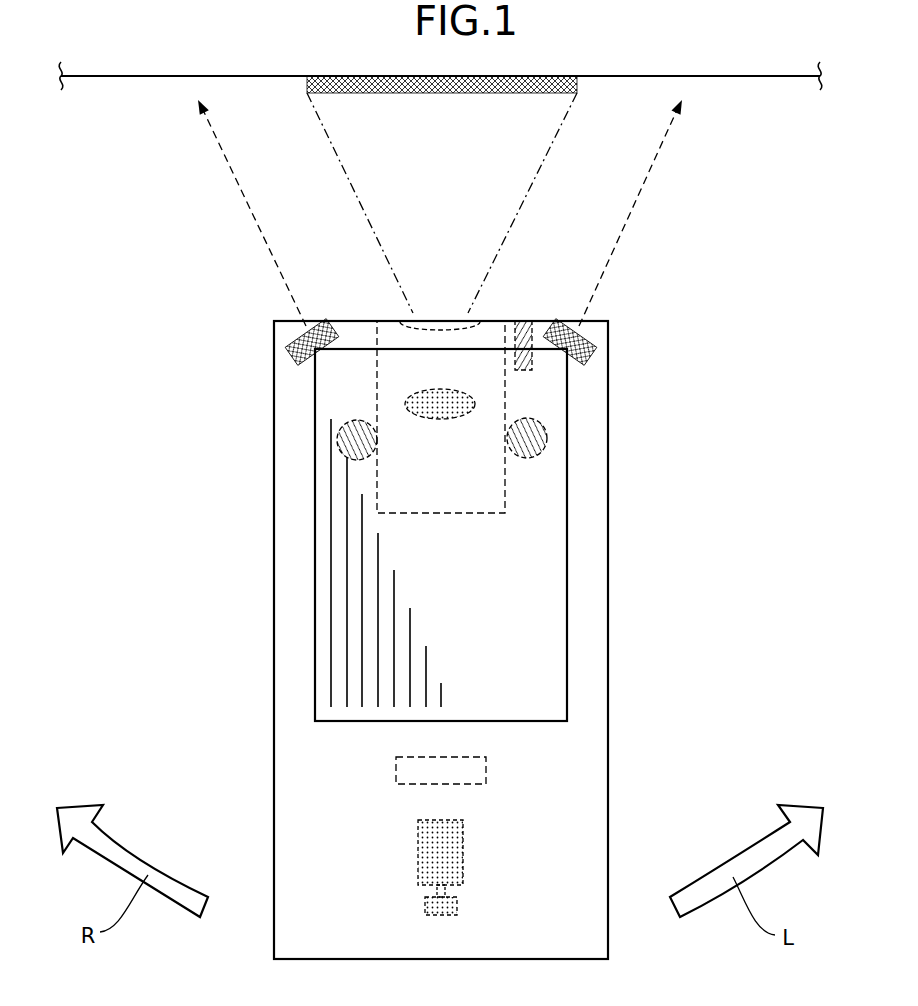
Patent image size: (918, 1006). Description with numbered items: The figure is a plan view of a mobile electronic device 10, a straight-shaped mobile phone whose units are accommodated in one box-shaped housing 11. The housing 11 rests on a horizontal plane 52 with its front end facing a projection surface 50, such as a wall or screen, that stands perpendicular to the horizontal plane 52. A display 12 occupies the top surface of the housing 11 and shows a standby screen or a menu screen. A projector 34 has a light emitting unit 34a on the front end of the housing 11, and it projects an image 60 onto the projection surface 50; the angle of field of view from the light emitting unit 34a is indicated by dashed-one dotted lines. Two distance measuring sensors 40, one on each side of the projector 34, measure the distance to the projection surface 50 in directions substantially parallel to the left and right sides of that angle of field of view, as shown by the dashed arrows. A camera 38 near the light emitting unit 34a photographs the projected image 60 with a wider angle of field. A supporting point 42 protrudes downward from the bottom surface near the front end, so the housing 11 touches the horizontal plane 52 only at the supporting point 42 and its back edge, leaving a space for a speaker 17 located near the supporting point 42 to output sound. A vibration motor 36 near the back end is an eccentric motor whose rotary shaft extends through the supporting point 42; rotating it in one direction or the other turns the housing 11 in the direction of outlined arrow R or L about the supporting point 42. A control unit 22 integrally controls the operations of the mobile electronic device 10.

The mobile electronic device 10 is at (647, 500).
The housing 11 is at (608, 580).
The display 12 is at (533, 655).
The speaker 17 is at (337, 442).
The control unit 22 is at (486, 770).
The projector 34 is at (505, 418).
The light emitting unit 34a is at (441, 318).
The vibration motor 36 is at (418, 838).
The camera 38 is at (540, 318).
The distance measuring sensors 40 is at (290, 353).
The supporting point 42 is at (405, 404).
The projection surface 50 is at (757, 77).
The horizontal plane 52 is at (734, 717).
The image 60 is at (446, 95).